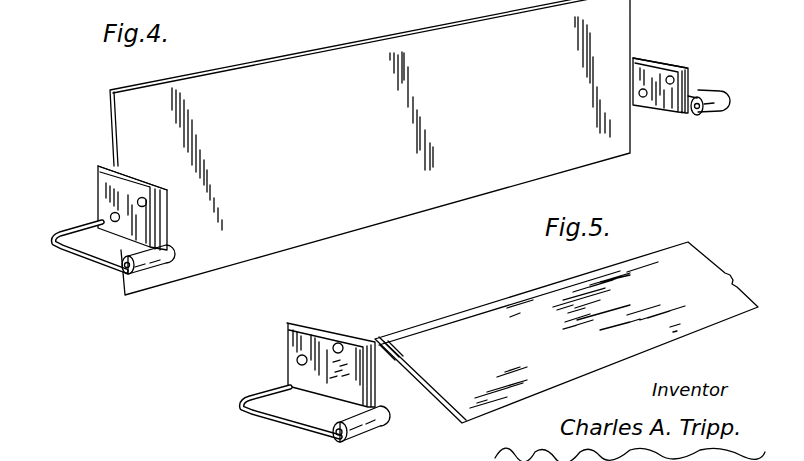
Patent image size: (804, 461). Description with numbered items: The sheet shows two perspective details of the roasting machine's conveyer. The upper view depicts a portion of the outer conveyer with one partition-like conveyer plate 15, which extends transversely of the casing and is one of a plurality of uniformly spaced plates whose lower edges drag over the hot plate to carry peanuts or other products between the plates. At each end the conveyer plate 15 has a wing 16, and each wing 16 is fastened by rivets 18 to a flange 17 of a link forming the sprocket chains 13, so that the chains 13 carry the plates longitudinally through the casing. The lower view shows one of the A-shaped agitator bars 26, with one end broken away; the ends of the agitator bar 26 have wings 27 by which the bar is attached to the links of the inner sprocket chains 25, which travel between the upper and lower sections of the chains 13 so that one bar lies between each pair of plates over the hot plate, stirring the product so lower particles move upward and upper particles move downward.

In FIG. 4, the sprocket chains 13 is at (84, 256).
In FIG. 4, the conveyer plates 15 is at (248, 78).
In FIG. 4, the wings 16 is at (143, 180).
In FIG. 4, the flanges 17 is at (113, 182).
In FIG. 4, the rivets 18 is at (142, 207).
In FIG. 5, the sprocket chains 25 is at (273, 420).
In FIG. 5, the agitator bars 26 is at (566, 332).
In FIG. 5, the wings 27 is at (348, 333).